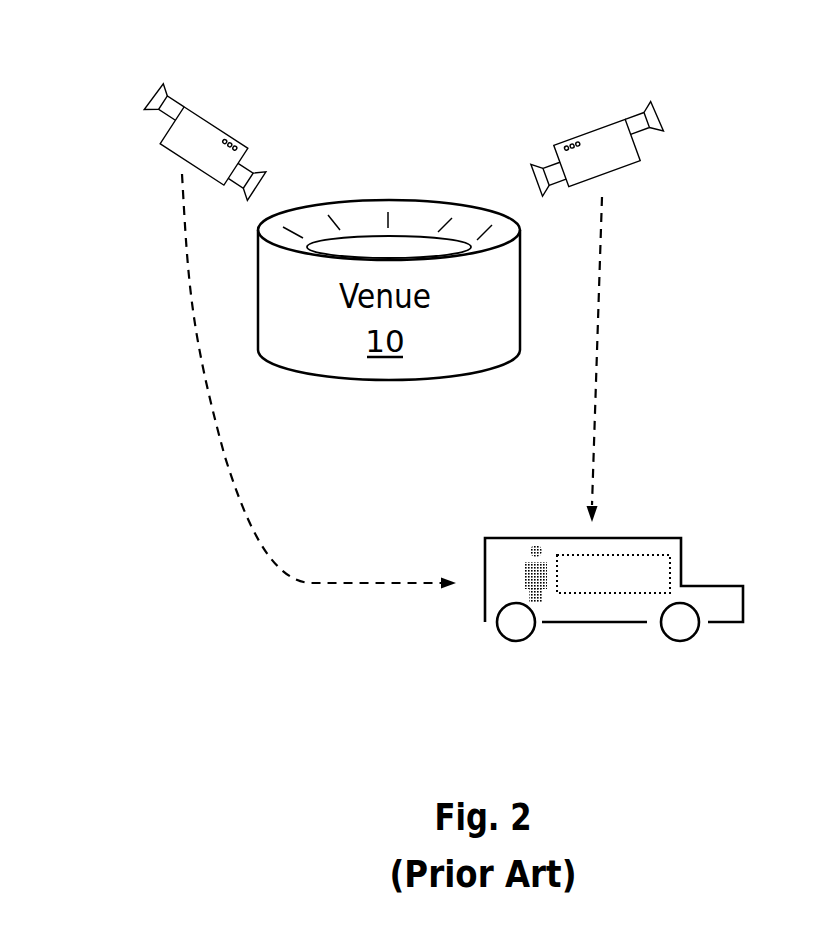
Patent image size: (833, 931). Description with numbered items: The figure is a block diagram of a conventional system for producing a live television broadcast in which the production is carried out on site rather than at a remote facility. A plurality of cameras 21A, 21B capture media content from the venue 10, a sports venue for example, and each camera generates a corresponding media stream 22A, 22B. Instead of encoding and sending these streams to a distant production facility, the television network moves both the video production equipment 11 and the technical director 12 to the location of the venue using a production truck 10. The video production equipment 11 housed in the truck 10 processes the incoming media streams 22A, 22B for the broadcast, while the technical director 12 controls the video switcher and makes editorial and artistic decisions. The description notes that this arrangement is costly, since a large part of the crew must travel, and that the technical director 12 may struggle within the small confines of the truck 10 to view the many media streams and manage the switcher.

The production truck 10 is at (663, 528).
The video production equipment 11 is at (662, 575).
The technical director 12 is at (530, 561).
The camera 21A is at (608, 98).
The camera 21B is at (237, 110).
The media stream 22A is at (600, 315).
The media stream 22B is at (197, 355).